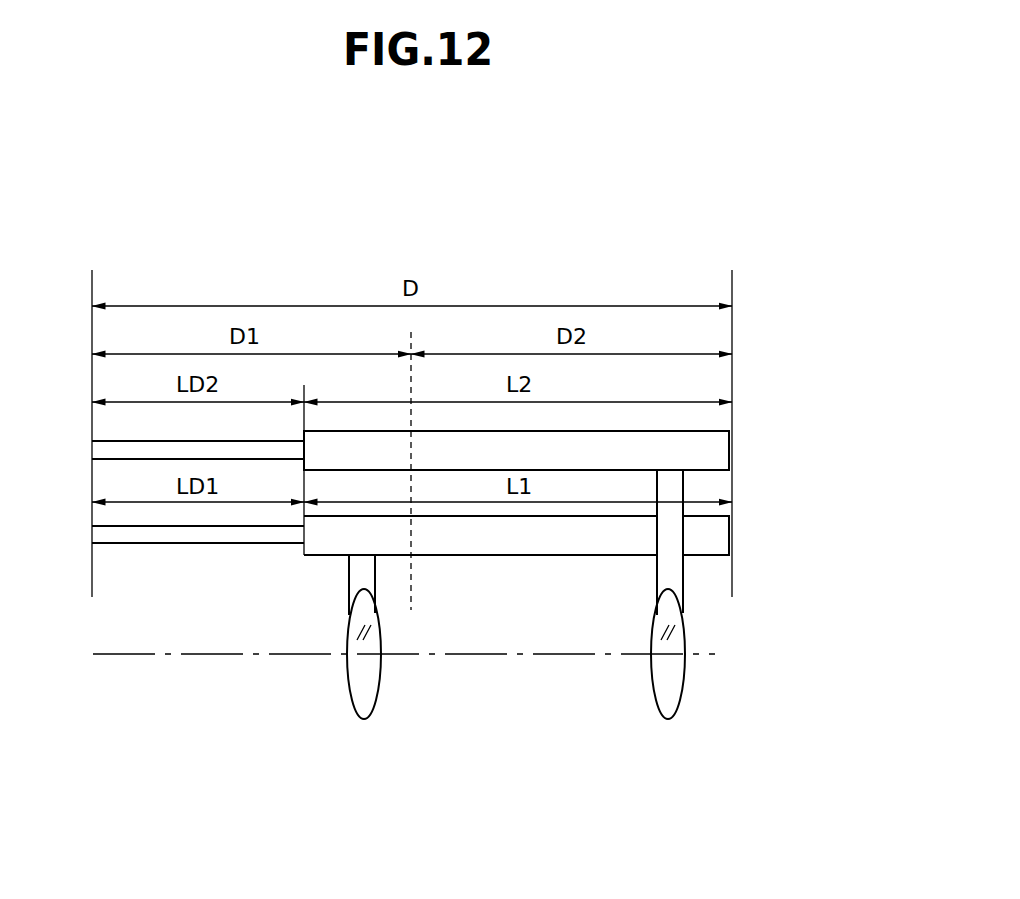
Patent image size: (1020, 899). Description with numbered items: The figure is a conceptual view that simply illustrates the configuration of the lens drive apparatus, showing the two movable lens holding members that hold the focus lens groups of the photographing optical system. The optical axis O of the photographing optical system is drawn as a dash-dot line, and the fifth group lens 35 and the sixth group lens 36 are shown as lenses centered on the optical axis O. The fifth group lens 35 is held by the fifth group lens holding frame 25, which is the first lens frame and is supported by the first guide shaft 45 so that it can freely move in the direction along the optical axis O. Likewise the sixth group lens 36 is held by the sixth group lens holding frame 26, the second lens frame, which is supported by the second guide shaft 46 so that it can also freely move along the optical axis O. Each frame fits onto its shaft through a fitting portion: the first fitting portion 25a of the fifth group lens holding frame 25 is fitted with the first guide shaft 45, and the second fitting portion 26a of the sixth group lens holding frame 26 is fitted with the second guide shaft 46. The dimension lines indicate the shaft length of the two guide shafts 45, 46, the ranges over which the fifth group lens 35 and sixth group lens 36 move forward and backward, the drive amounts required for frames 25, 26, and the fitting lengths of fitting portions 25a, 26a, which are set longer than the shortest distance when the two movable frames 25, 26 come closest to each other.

The second guide shaft 46 is at (118, 449).
The first guide shaft 45 is at (145, 535).
The second fitting portion 26a is at (710, 441).
The first fitting portion 25a is at (720, 537).
The fifth group lens holding frame 25 is at (355, 573).
The sixth group lens holding frame 26 is at (670, 575).
The fifth group lens 35 is at (364, 704).
The sixth group lens 36 is at (668, 704).
The optical axis O is at (127, 655).